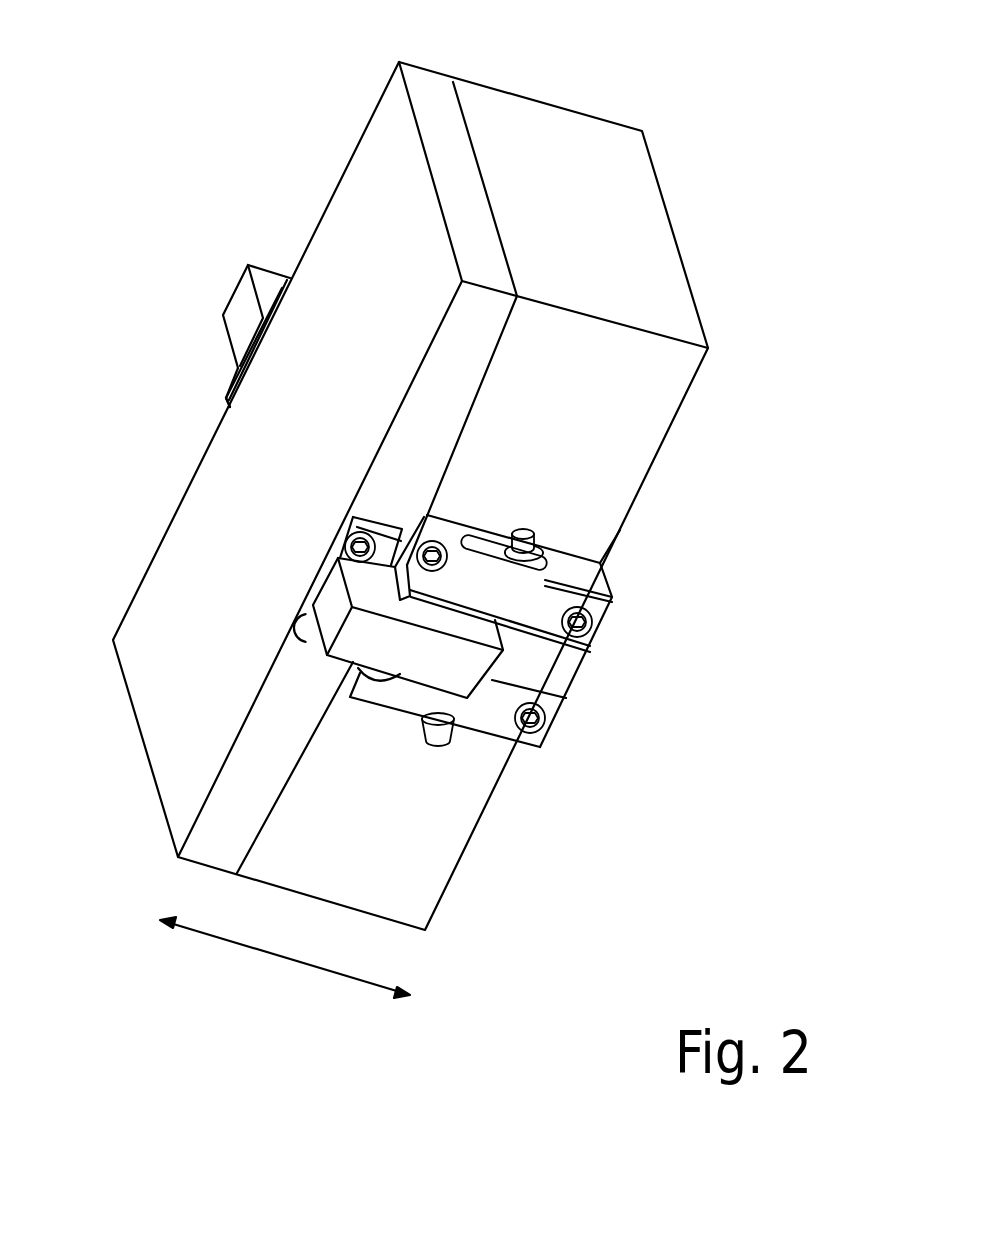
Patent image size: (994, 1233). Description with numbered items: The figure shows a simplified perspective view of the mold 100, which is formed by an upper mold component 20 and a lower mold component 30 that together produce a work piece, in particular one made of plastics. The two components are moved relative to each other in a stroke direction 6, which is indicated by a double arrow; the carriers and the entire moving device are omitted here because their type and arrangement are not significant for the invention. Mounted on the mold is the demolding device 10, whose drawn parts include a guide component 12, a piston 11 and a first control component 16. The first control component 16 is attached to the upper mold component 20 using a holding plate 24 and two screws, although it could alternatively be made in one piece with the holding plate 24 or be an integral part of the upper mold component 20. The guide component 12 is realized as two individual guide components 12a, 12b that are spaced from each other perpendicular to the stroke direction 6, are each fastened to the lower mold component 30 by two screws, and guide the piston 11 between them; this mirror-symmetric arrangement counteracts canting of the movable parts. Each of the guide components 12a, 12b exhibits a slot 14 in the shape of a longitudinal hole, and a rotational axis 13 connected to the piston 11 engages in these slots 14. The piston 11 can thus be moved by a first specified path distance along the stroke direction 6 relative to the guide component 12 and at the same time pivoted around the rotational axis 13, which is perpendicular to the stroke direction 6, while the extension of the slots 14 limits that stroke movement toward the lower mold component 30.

The mold 100 is at (735, 112).
The lower mold component 30 is at (592, 140).
The upper mold component 20 is at (377, 158).
The guide component 12 is at (241, 283).
The holding plate 24 is at (352, 516).
The first control component 16 is at (322, 610).
The piston 11 is at (570, 670).
The individual guide component 12a is at (538, 738).
The individual guide component 12b is at (612, 593).
The rotational axis 13 is at (528, 535).
The slot 14 is at (482, 545).
The demolding device 10 is at (297, 682).
The stroke direction 6 is at (297, 960).